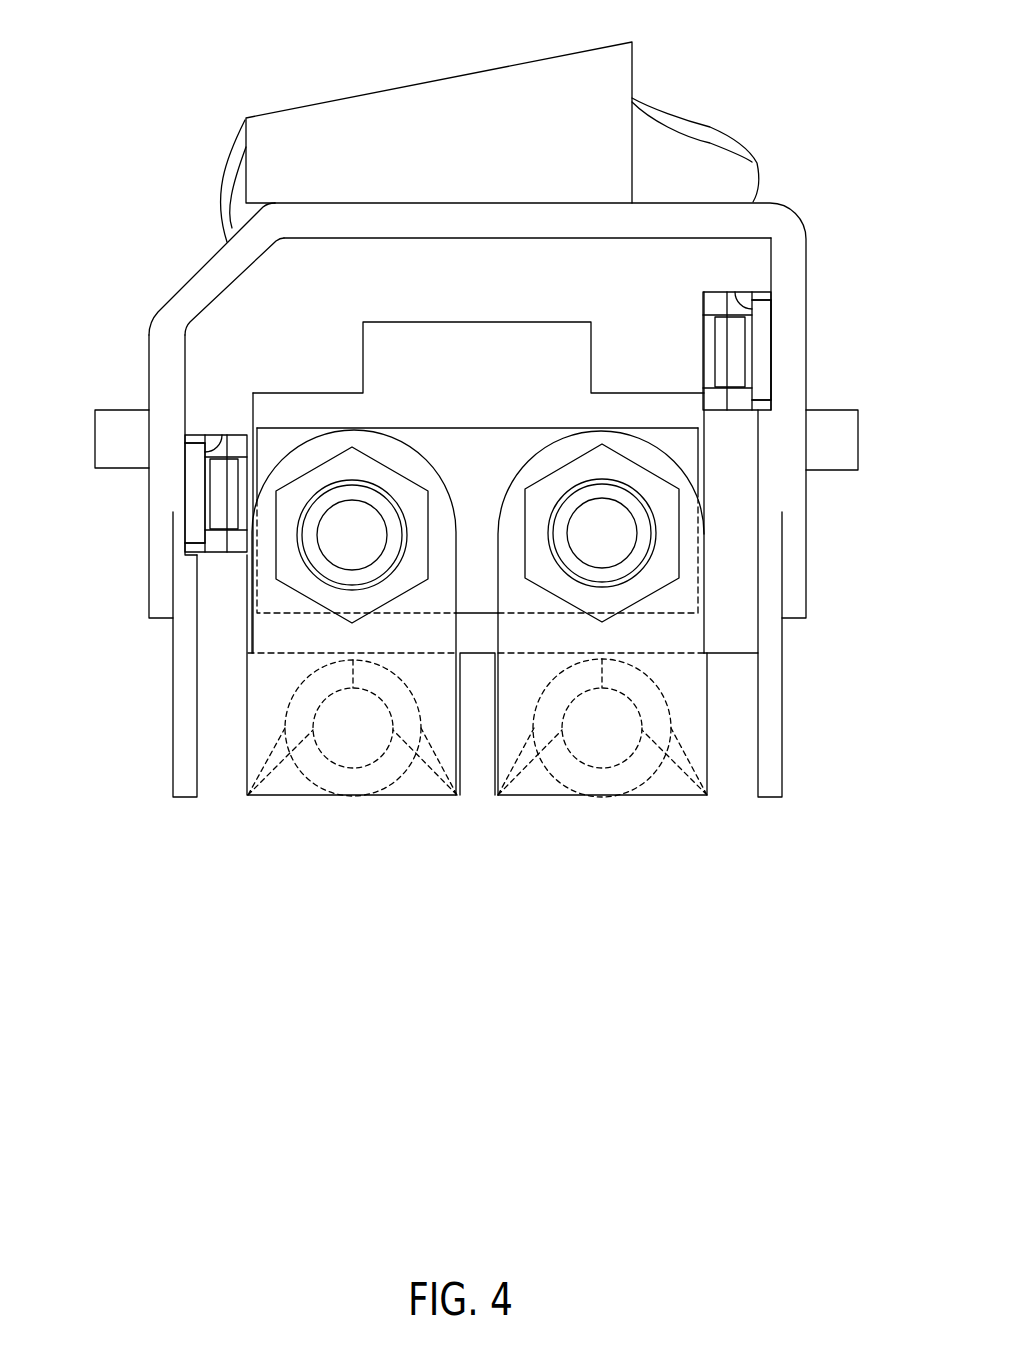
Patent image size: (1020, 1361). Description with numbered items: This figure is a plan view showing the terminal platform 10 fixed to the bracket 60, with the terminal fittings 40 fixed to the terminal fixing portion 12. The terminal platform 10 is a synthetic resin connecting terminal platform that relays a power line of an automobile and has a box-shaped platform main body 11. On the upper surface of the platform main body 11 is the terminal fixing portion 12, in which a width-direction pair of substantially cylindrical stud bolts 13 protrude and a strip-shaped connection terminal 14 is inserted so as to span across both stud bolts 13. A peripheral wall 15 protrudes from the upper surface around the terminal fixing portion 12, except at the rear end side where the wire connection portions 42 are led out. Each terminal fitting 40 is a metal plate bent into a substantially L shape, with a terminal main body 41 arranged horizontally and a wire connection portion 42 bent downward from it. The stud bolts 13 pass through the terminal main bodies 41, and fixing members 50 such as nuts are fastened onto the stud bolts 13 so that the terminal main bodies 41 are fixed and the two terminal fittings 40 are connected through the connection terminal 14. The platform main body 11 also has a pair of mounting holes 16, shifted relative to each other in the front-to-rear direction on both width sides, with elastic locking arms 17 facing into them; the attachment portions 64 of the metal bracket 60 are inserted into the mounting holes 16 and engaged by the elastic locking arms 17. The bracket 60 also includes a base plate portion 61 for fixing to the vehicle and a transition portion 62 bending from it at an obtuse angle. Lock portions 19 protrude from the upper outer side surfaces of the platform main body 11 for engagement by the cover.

The terminal platform 10 is at (329, 202).
The platform main body 11 is at (803, 222).
The terminal fixing portion 12 is at (273, 415).
The stud bolt 13 is at (620, 550).
The connection terminal 14 is at (723, 438).
The peripheral wall 15 is at (218, 267).
The mounting hole 16 is at (752, 307).
The elastic locking arm 17 is at (732, 335).
The lock portion 19 is at (108, 432).
The terminal fitting 40 is at (248, 735).
The terminal main body 41 is at (262, 573).
The wire connection portion 42 is at (408, 797).
The fixing member 50 is at (673, 505).
The bracket 60 is at (707, 130).
The base plate portion 61 is at (738, 168).
The transition portion 62 is at (405, 108).
The attachment portion 64 is at (760, 360).